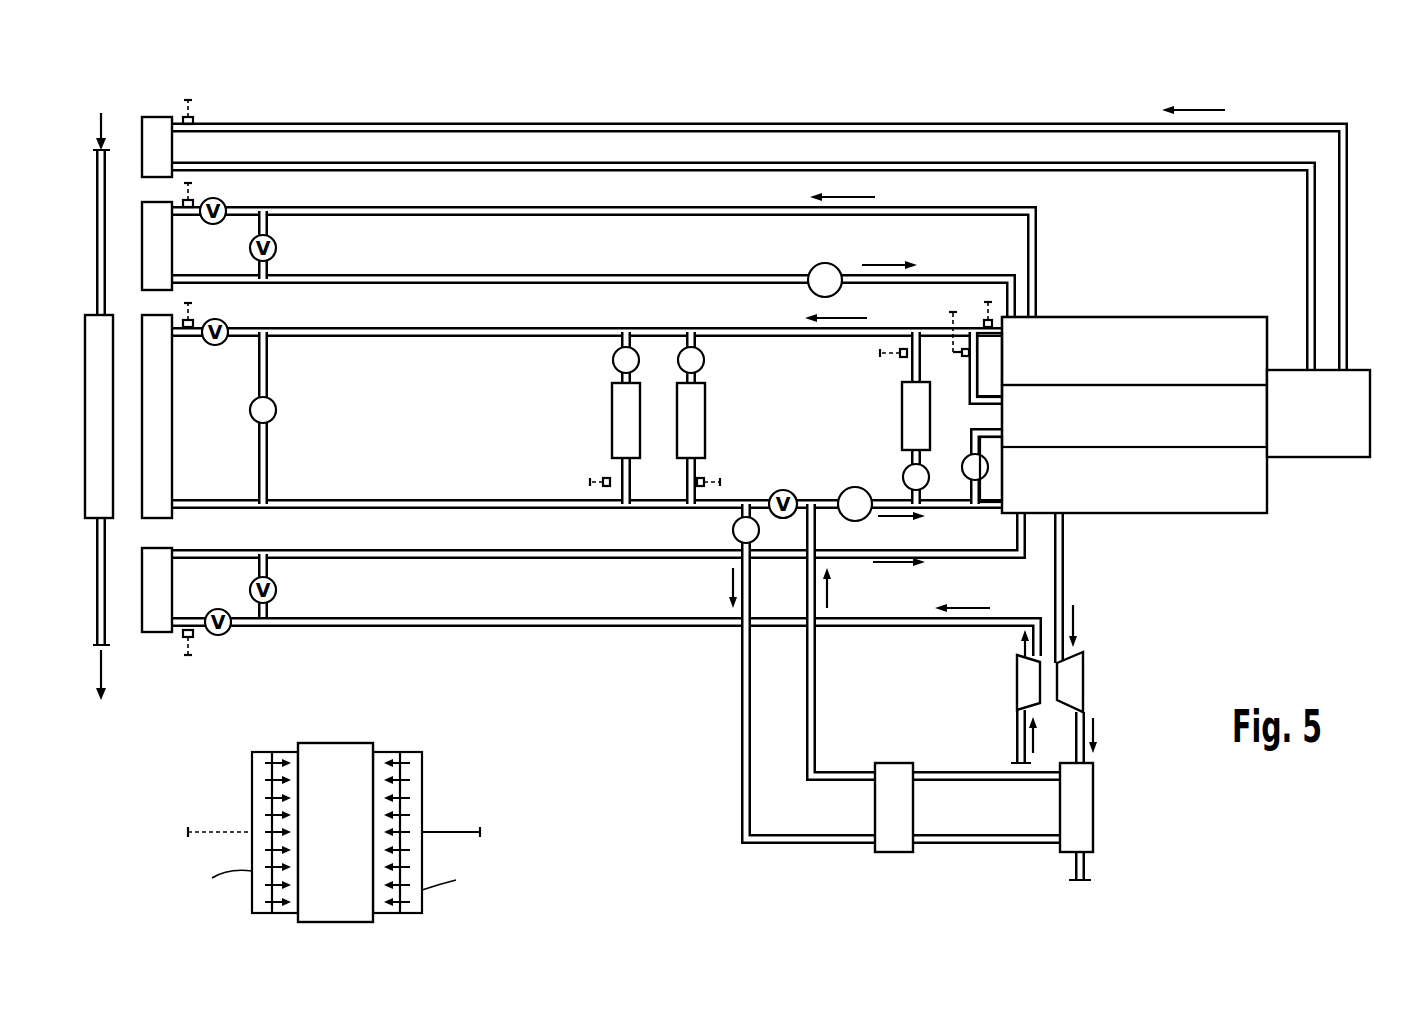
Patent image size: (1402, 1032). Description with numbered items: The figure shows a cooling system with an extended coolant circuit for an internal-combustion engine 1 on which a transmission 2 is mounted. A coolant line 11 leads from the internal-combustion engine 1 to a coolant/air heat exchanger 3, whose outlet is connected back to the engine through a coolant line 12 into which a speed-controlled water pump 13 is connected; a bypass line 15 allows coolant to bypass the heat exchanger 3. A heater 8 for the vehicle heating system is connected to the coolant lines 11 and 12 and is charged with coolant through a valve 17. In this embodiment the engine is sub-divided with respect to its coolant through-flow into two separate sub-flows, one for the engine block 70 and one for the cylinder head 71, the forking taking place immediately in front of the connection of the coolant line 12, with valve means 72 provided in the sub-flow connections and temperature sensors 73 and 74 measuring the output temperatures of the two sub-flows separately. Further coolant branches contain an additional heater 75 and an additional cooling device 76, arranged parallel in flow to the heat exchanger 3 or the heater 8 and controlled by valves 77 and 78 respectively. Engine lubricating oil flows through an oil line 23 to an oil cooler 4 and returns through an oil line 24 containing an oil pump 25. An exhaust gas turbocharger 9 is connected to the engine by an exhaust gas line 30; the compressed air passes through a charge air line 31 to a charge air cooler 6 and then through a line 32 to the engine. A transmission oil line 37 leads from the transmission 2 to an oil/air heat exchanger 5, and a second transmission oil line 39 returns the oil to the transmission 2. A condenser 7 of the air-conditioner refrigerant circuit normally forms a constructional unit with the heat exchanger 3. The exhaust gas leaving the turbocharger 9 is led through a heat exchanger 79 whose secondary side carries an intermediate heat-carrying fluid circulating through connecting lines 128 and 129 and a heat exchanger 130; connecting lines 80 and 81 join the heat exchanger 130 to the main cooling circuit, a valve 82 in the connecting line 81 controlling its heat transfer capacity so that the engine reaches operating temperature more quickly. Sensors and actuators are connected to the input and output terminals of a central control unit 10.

The internal-combustion engine 1 is at (1122, 418).
The transmission 2 is at (1320, 458).
The heat exchanger 3 is at (158, 428).
The oil cooler 4 is at (150, 230).
The heat exchanger 5 is at (153, 121).
The charge air cooler 6 is at (155, 628).
The condenser 7 is at (102, 412).
The heater 8 is at (612, 411).
The exhaust gas turbocharger 9 is at (1077, 686).
The central control unit 10 is at (332, 757).
The coolant line 11 is at (415, 337).
The coolant line 12 is at (493, 502).
The water pump 13 is at (845, 492).
The bypass line 15 is at (268, 449).
The valve 17 is at (612, 360).
The oil line 23 is at (635, 215).
The oil line 24 is at (668, 275).
The oil pump 25 is at (836, 268).
The exhaust gas line 30 is at (1086, 622).
The charge air line 31 is at (510, 628).
The line 32 is at (483, 559).
The transmission oil line 37 is at (668, 124).
The second transmission oil line 39 is at (1134, 170).
The engine block 70 is at (1165, 325).
The cylinder head 71 is at (1143, 430).
The valve means 72 is at (964, 478).
The temperature sensor 73 is at (962, 362).
The temperature sensor 74 is at (984, 320).
The additional heater 75 is at (698, 411).
The additional cooling device 76 is at (905, 405).
The valve 77 is at (704, 360).
The valve 78 is at (904, 472).
The heat exchanger 79 is at (1085, 815).
The connecting line 80 is at (813, 684).
The connecting line 81 is at (743, 775).
The valve 82 is at (732, 530).
The connecting line 128 is at (955, 773).
The connecting line 129 is at (1013, 843).
The heat exchanger 130 is at (893, 840).